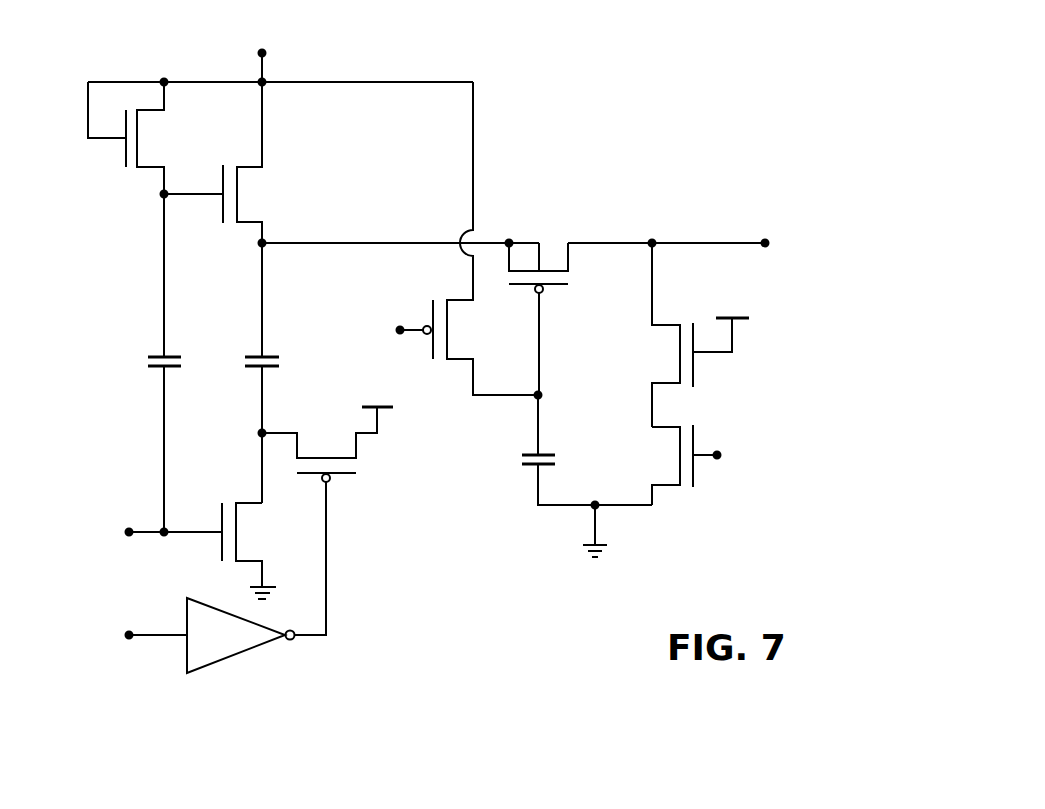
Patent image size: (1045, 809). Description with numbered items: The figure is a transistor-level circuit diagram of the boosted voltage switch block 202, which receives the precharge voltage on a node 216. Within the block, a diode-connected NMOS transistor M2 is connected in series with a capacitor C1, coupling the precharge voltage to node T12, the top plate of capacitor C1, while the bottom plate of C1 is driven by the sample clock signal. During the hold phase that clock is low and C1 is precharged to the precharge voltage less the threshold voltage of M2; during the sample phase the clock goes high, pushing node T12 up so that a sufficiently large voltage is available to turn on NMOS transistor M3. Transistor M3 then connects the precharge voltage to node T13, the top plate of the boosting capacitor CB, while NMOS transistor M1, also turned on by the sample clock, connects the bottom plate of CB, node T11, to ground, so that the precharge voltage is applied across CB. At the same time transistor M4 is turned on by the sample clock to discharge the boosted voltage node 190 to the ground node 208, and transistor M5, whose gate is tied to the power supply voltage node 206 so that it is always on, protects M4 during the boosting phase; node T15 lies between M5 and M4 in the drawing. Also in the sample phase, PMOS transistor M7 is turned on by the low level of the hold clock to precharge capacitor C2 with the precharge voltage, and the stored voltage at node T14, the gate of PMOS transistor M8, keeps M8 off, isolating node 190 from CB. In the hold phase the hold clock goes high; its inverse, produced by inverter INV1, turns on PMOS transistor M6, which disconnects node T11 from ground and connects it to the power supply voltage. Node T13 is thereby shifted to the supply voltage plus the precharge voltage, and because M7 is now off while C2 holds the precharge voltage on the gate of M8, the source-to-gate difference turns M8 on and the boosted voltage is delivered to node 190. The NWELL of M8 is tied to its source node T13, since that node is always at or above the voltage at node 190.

The boosted voltage switch block 202 is at (694, 49).
The node 216 is at (270, 53).
The boosted voltage node 190 is at (765, 243).
The power supply VDD voltage node 206 is at (745, 321).
The ground or VSS voltage node 208 is at (604, 545).
The node T11 is at (262, 433).
The node T12 is at (164, 194).
The node T13 is at (262, 243).
The node T14 is at (538, 395).
The node T15 is at (652, 403).
The NMOS transistor M1 is at (180, 551).
The diode-connected NMOS transistor M2 is at (131, 137).
The NMOS transistor M3 is at (249, 162).
The transistor M4 is at (694, 465).
The transistor M5 is at (685, 335).
The PMOS transistor M6 is at (331, 505).
The PMOS transistor M7 is at (447, 238).
The PMOS transistor M8 is at (537, 304).
The capacitor C1 is at (173, 363).
The capacitor C2 is at (587, 467).
The boosting capacitor CB is at (272, 338).
The inverter INV1 is at (190, 635).